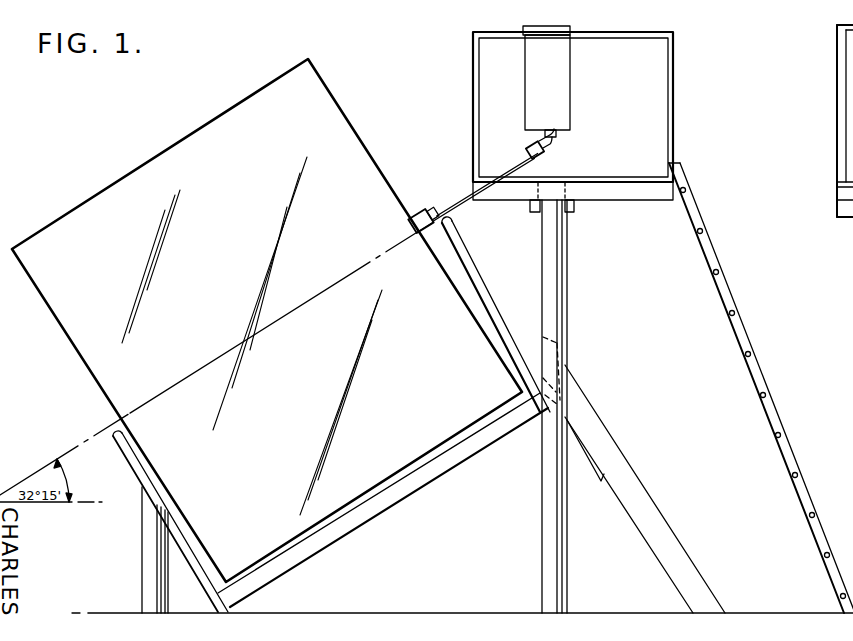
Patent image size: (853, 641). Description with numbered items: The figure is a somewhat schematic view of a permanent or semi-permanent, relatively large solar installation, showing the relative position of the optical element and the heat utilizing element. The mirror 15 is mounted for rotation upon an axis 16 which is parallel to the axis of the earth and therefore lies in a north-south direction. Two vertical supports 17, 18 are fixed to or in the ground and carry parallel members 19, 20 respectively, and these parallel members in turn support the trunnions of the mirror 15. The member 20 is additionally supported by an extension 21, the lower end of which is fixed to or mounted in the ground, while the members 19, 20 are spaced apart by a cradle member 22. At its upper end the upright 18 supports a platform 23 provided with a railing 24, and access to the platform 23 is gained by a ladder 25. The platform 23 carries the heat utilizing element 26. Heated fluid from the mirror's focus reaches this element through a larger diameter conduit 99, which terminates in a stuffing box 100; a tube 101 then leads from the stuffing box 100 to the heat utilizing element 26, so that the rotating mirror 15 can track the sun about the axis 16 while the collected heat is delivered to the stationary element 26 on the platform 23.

The mirror 15 is at (282, 506).
The axis 16 is at (300, 305).
The vertical support 17 is at (142, 540).
The vertical support 18 is at (555, 297).
The parallel member 19 is at (130, 472).
The parallel member 20 is at (481, 278).
The extension 21 is at (650, 498).
The cradle member 22 is at (405, 497).
The platform 23 is at (588, 183).
The railing 24 is at (618, 33).
The ladder 25 is at (741, 331).
The heat utilizing element 26 is at (558, 88).
The conduit 99 is at (497, 171).
The stuffing box 100 is at (538, 158).
The tube 101 is at (557, 143).